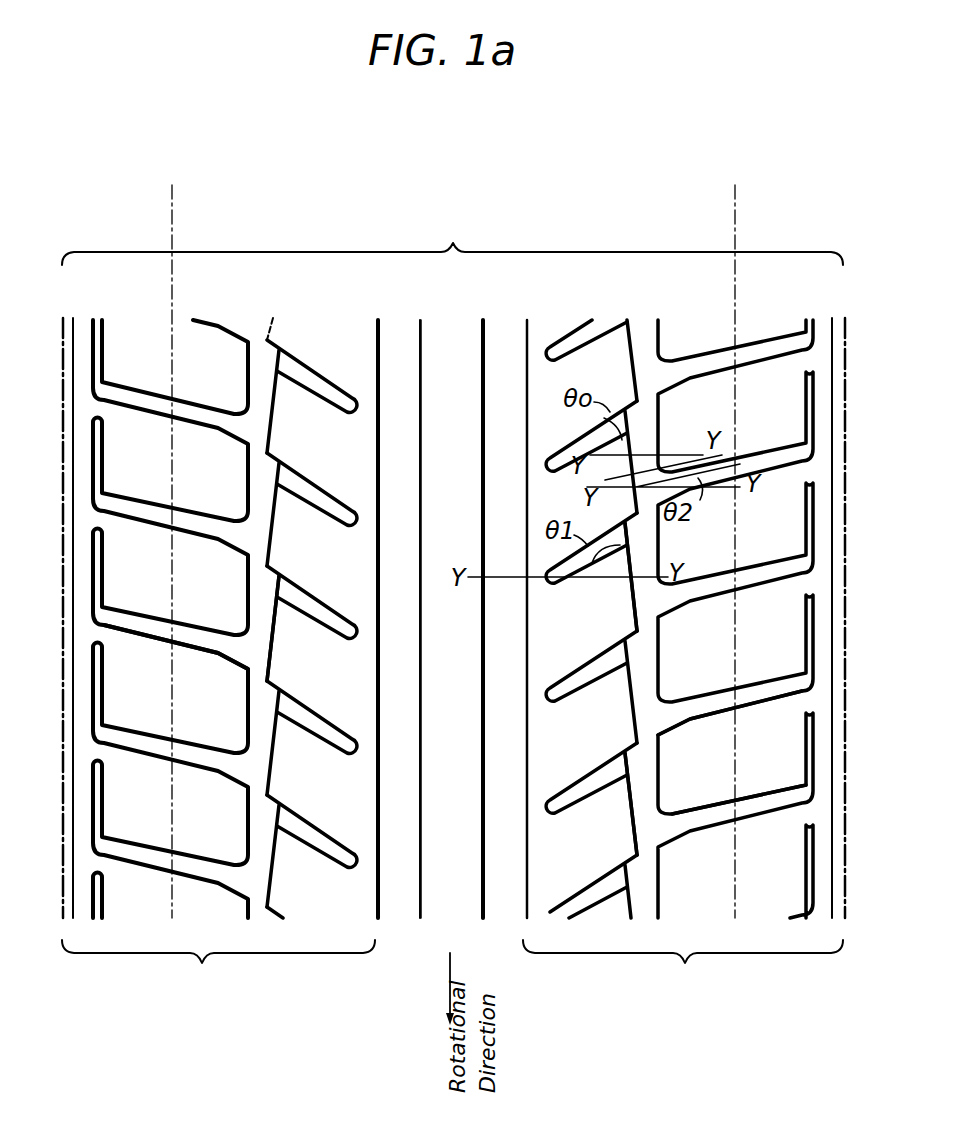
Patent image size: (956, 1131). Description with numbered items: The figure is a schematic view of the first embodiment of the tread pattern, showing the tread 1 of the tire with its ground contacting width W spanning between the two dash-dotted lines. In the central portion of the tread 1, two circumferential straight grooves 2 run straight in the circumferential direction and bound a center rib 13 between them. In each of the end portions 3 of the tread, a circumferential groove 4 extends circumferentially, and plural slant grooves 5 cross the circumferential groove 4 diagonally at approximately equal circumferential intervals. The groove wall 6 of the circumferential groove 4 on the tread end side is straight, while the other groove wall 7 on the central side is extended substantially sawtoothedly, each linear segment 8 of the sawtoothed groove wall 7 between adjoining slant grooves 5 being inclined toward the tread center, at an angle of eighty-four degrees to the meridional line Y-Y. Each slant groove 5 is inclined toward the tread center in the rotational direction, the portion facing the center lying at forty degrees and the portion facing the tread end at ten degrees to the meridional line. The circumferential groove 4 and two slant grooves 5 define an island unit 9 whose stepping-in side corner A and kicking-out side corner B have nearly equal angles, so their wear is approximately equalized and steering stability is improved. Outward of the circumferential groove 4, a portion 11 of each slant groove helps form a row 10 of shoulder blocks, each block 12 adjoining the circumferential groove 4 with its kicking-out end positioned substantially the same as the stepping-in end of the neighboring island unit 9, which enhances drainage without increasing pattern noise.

The tread 1 is at (452, 238).
The circumferential straight grooves 2 is at (506, 320).
The end portions of the tread 3 is at (453, 658).
The circumferential groove 4 is at (272, 889).
The slant grooves 5 is at (302, 846).
The groove wall 6 is at (247, 596).
The groove wall 7 is at (271, 643).
The linear segment 8 is at (272, 530).
The island unit 9 is at (558, 755).
The row of shoulder blocks 10 is at (697, 318).
The portion of the slant groove 11 is at (706, 800).
The block 12 is at (722, 553).
The center rib 13 is at (451, 320).
The stepping-in side corner A is at (628, 855).
The kicking-out side corner B is at (590, 795).
The ground contacting width W is at (172, 193).